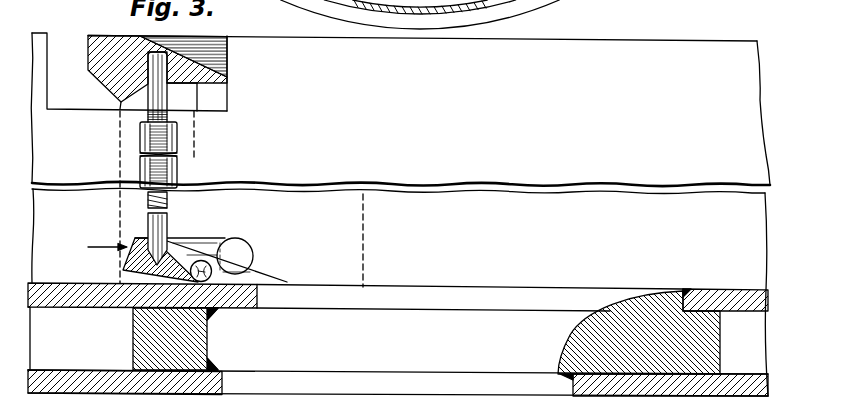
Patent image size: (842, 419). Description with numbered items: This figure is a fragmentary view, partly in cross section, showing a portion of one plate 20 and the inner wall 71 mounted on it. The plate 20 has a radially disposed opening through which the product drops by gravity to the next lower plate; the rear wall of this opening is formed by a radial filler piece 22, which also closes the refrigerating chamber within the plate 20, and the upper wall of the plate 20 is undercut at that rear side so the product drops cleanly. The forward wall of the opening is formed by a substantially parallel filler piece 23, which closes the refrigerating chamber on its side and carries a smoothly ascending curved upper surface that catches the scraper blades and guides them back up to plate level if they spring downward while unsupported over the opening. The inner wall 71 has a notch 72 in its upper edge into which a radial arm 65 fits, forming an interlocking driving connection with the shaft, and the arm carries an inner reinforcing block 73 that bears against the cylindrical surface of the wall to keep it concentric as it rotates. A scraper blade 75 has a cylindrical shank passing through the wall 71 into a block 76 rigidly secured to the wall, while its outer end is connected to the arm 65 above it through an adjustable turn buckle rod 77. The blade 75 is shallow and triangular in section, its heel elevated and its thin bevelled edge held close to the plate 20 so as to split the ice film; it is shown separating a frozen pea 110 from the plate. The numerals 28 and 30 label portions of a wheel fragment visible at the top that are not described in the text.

The plate 20 is at (727, 288).
The radial filler piece 22 is at (190, 339).
The parallel filler piece 23 is at (574, 330).
The gear teeth 28 is at (418, 4).
The wheel rim 30 is at (420, 15).
The radial arm 65 is at (98, 40).
The inner wall 71 is at (672, 47).
The notch 72 is at (224, 93).
The inner reinforcing block 73 is at (187, 97).
The scraper blade 75 is at (196, 244).
The block 76 is at (362, 228).
The adjustable turn buckle rod 77 is at (173, 141).
The frozen pea 110 is at (212, 268).